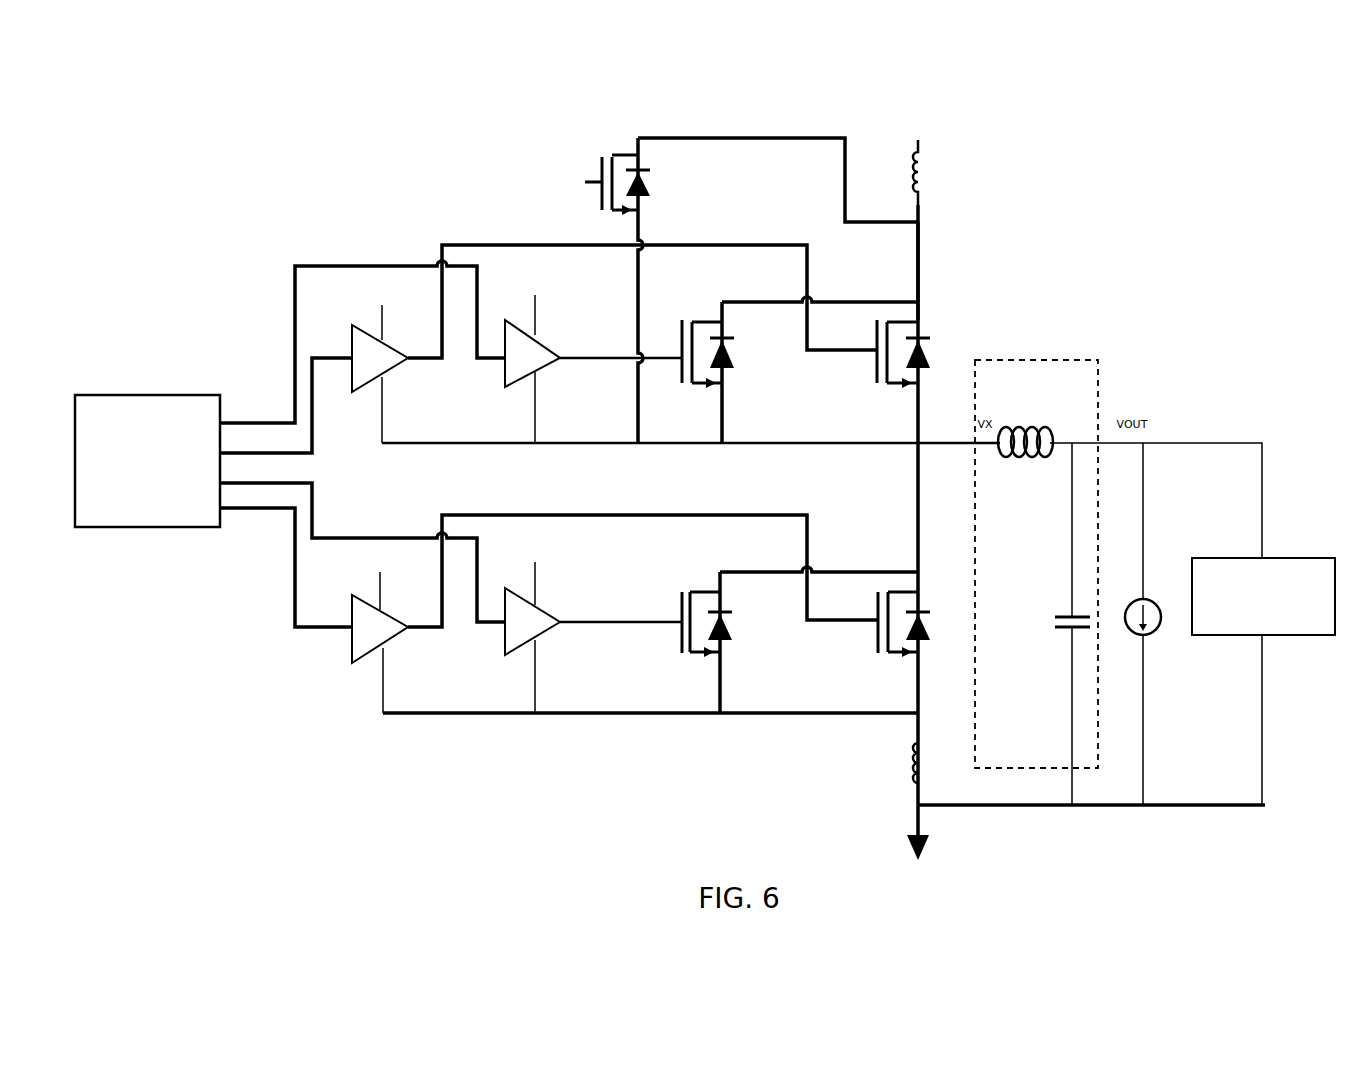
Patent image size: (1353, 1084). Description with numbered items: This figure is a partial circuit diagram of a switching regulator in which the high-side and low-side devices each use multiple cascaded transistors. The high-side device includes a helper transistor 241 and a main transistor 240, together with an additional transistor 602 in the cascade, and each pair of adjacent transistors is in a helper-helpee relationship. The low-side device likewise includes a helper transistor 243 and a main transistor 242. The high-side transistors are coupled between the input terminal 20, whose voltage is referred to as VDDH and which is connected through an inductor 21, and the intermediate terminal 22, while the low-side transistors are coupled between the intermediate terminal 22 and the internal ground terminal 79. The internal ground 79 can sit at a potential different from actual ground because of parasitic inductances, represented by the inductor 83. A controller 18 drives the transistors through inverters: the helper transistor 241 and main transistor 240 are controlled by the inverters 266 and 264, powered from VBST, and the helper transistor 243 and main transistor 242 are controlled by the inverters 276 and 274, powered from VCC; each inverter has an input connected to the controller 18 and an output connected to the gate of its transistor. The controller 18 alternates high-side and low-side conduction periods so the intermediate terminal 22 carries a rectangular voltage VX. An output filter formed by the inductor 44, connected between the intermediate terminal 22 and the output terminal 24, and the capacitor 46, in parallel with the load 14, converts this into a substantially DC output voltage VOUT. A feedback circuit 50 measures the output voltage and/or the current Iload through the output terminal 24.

The controller 18 is at (147, 461).
The inverter 264 is at (614, 344).
The inverter 266 is at (593, 351).
The inverter 274 is at (615, 614).
The inverter 276 is at (593, 621).
The additional transistor 602 is at (739, 290).
The helper transistor 241 is at (793, 370).
The main transistor 240 is at (898, 364).
The helper transistor 243 is at (789, 640).
The main transistor 242 is at (903, 633).
The supply inductor 21 is at (926, 150).
The input terminal 20 is at (931, 271).
The intermediate terminal 22 is at (691, 456).
The internal ground terminal 79 is at (650, 726).
The inductor 83 is at (903, 763).
The inductor 44 is at (1025, 465).
The capacitor 46 is at (1061, 624).
The load 14 is at (1145, 624).
The output terminal 24 is at (1150, 442).
The feedback circuit 50 is at (1263, 596).